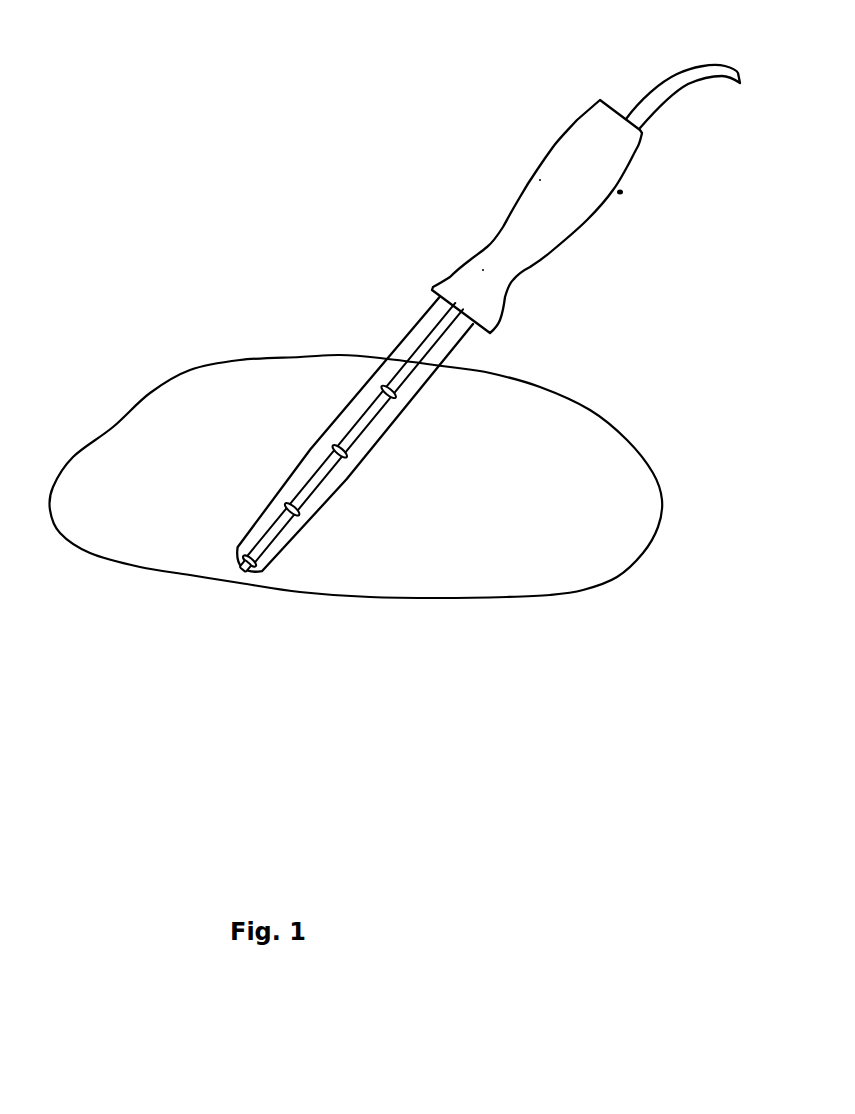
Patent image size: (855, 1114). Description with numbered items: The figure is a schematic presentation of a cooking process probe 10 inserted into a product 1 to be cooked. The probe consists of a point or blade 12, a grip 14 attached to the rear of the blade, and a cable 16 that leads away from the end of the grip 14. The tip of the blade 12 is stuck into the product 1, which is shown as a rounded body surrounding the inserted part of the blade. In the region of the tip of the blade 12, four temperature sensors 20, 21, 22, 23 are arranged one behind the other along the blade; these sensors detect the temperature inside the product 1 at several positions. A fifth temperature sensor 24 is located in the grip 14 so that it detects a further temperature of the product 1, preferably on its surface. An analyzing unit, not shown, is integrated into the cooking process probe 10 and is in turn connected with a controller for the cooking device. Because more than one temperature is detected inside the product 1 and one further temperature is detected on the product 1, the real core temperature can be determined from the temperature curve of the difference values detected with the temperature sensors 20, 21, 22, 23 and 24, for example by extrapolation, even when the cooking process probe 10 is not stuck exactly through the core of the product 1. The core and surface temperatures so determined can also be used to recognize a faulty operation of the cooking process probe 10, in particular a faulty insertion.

The product to be cooked 1 is at (482, 563).
The cooking process probe 10 is at (568, 247).
The point or blade 12 is at (441, 347).
The grip 14 is at (637, 152).
The cable 16 is at (660, 82).
The temperature sensor 20 is at (240, 564).
The temperature sensor 21 is at (280, 503).
The temperature sensor 22 is at (330, 447).
The temperature sensor 23 is at (384, 388).
The fifth temperature sensor 24 is at (523, 238).